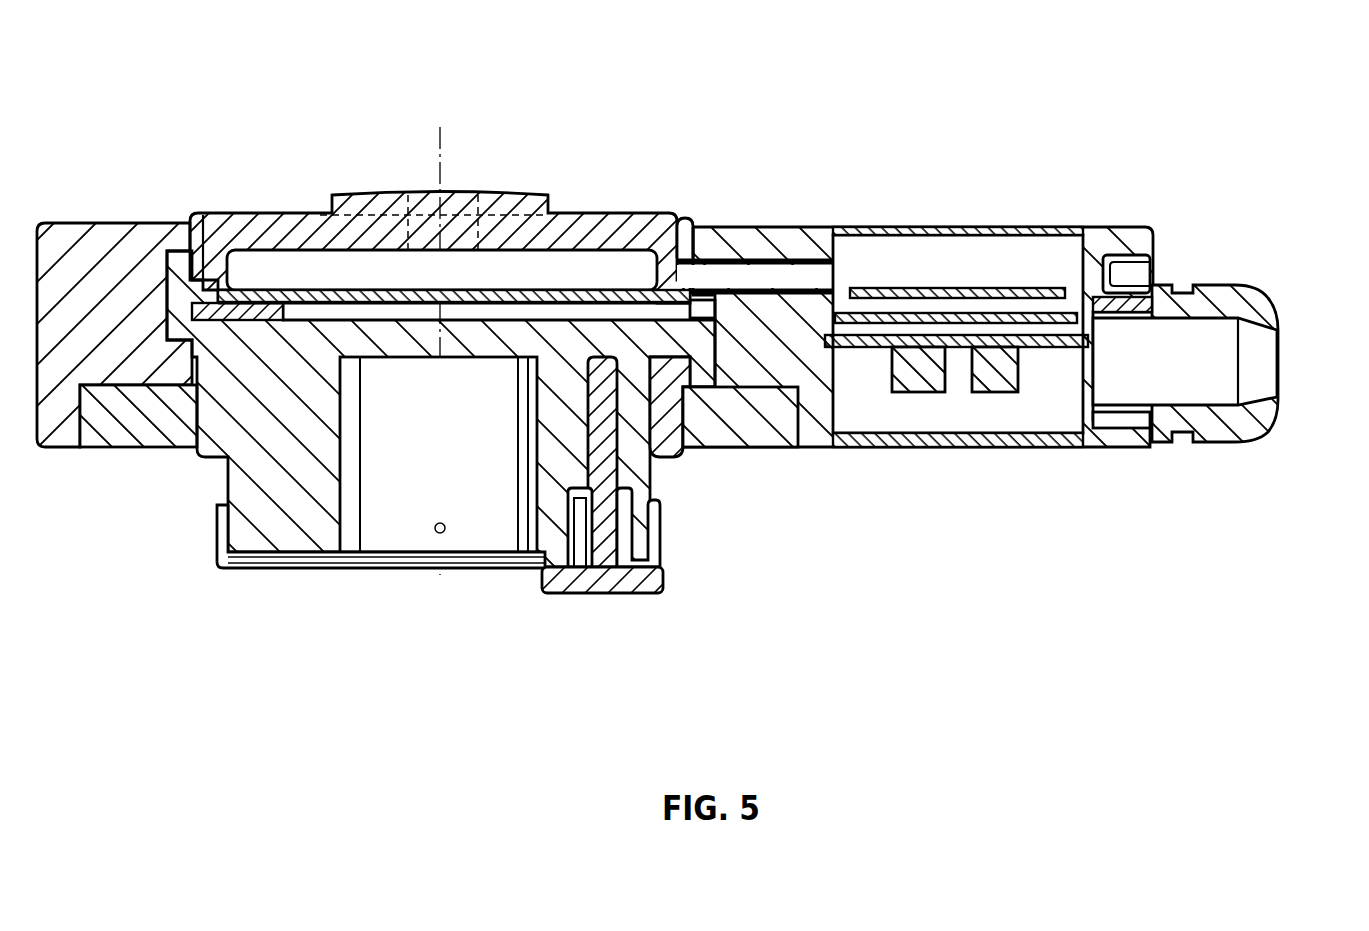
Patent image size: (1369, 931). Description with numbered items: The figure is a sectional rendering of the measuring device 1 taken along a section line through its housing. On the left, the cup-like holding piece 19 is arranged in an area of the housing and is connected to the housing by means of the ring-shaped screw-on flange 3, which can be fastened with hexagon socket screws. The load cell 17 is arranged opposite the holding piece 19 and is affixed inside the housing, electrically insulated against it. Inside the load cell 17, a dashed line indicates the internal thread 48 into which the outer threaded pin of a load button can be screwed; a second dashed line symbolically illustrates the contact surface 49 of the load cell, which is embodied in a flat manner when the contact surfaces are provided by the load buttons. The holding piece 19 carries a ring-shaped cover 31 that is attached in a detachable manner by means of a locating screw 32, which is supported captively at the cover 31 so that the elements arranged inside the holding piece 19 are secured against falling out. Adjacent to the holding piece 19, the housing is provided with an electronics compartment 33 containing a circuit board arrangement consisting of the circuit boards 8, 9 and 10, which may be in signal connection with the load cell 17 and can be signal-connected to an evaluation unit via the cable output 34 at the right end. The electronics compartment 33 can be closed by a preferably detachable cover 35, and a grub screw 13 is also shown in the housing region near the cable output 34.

The measuring device 1 is at (728, 176).
The screw-on flange 3 is at (733, 430).
The circuit board 8 is at (1003, 372).
The circuit board 9 is at (862, 310).
The circuit board 10 is at (969, 281).
The grub screw 13 is at (1136, 273).
The load cell 17 is at (382, 195).
The holding piece 19 is at (267, 472).
The cover 31 is at (255, 560).
The locating screw 32 is at (610, 578).
The electronics compartment 33 is at (862, 408).
The cable output 34 is at (1227, 300).
The cover 35 is at (987, 449).
The internal thread 48 is at (493, 193).
The contact surface 49 is at (520, 199).